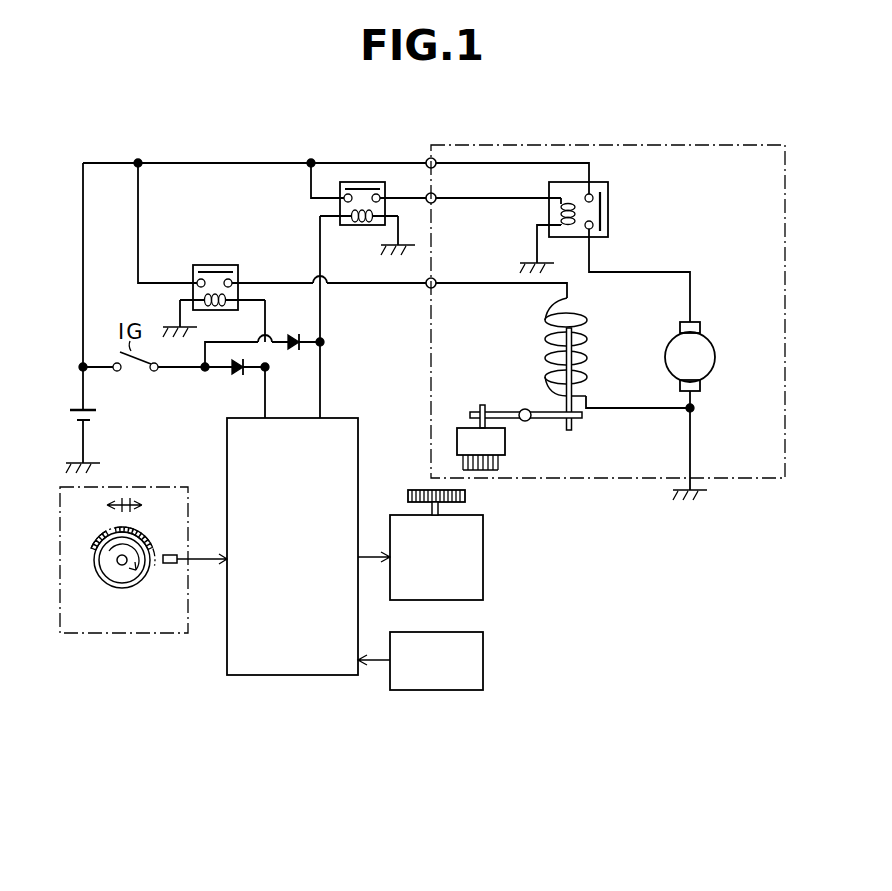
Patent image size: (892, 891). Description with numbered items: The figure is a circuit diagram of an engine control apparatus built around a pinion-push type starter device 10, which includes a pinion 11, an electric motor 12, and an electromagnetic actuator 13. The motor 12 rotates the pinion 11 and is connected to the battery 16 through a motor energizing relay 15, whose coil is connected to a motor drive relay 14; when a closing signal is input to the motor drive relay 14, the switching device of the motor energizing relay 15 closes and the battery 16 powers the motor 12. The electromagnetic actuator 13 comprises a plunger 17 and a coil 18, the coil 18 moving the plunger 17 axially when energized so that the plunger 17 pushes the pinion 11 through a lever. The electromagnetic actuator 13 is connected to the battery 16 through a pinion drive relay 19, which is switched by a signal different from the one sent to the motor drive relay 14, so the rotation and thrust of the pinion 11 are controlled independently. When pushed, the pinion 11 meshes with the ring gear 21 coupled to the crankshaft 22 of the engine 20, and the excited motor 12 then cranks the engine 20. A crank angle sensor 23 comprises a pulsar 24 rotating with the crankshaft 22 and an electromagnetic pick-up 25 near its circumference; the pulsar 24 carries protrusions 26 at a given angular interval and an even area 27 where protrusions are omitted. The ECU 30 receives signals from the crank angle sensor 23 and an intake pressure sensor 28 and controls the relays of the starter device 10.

The starter device 10 is at (722, 145).
The pinion 11 is at (506, 463).
The electric motor 12 is at (718, 357).
The electromagnetic actuator 13 is at (554, 364).
The motor drive relay 14 is at (352, 228).
The motor energizing relay 15 is at (611, 198).
The battery 16 is at (76, 410).
The plunger 17 is at (576, 388).
The coil 18 is at (590, 343).
The pinion drive relay 19 is at (216, 264).
The engine 20 is at (485, 575).
The ring gear 21 is at (408, 495).
The crankshaft 22 is at (440, 508).
The crank angle sensor 23 is at (127, 635).
The pulsar 24 is at (124, 583).
The electromagnetic pick-up 25 is at (168, 565).
The protrusions 26 is at (150, 536).
The even area 27 is at (100, 533).
The intake pressure sensor 28 is at (485, 660).
The ECU 30 is at (330, 677).